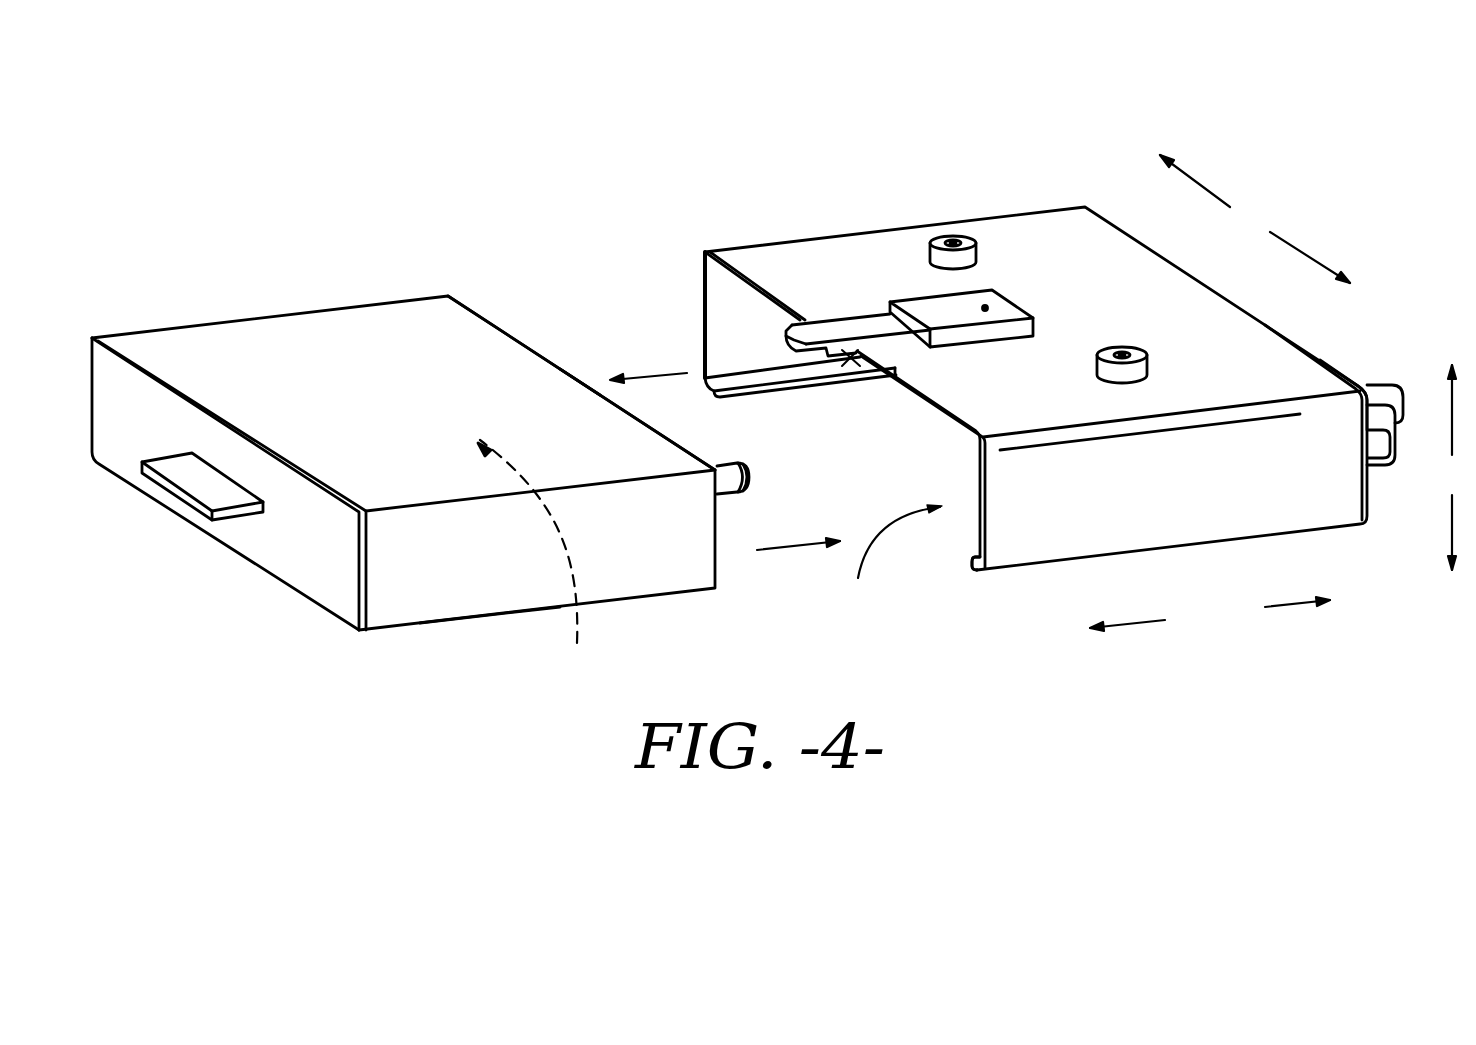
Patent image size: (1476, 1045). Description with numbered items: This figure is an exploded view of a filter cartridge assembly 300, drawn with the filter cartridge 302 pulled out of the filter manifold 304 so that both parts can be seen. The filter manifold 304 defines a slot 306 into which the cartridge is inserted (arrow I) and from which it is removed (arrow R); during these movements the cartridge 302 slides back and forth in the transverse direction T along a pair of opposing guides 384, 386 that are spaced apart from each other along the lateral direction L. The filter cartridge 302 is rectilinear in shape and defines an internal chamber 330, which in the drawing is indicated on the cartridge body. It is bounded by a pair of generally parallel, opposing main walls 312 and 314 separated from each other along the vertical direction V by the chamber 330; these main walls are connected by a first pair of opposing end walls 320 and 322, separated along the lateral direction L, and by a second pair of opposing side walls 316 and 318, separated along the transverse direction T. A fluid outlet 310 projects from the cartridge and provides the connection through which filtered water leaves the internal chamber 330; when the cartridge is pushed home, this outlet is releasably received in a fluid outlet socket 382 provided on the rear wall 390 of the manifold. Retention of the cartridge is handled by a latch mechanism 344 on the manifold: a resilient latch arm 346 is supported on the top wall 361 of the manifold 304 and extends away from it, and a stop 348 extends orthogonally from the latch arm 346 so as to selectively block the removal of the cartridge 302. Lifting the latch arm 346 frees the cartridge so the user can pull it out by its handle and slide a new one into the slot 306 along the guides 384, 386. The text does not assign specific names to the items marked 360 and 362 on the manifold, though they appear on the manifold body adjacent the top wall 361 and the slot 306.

The filter cartridge assembly 300 is at (478, 150).
The filter cartridge 302 is at (230, 300).
The filter manifold 304 is at (995, 183).
The slot 306 is at (885, 561).
The fluid outlet 310 is at (723, 492).
The main wall 312 is at (455, 335).
The main wall 314 is at (485, 620).
The side wall 316 is at (303, 563).
The side wall 318 is at (578, 376).
The end wall 320 is at (375, 303).
The end wall 322 is at (640, 572).
The internal chamber 330 is at (540, 560).
The latch mechanism 344 is at (897, 287).
The resilient latch arm 346 is at (860, 327).
The stop 348 is at (850, 362).
The rear wall 360 is at (703, 290).
The top wall 361 is at (1035, 232).
The front wall of bracket 362 is at (1020, 540).
The fluid outlet socket 382 is at (1380, 422).
The guide 384 is at (748, 388).
The guide 386 is at (972, 552).
The rear wall 390 is at (1345, 370).